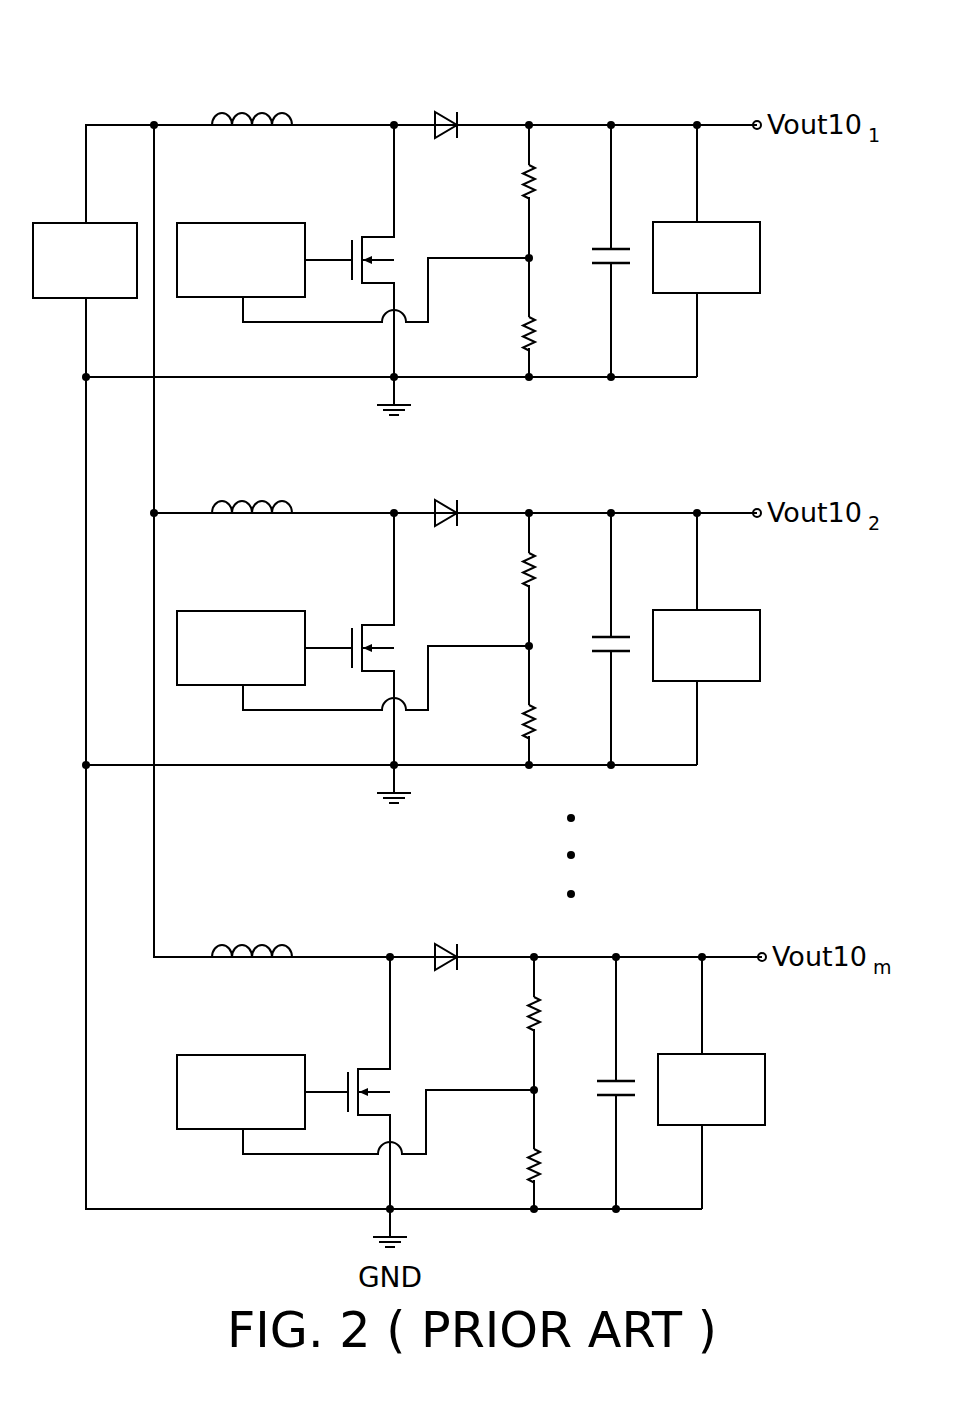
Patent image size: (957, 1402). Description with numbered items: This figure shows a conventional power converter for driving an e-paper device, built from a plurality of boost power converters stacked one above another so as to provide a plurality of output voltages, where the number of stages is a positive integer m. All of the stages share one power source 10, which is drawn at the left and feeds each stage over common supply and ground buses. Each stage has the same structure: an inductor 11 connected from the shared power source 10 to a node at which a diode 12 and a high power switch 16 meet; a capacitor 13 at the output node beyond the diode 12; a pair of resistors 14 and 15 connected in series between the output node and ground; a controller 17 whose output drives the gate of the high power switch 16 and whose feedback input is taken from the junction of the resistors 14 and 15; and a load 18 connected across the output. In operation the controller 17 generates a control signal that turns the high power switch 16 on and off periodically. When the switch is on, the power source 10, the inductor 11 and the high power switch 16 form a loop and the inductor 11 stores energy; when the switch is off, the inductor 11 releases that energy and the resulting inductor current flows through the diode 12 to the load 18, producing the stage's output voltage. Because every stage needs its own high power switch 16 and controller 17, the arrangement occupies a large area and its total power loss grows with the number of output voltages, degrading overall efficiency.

The power source 10 is at (117, 222).
The inductor 11 is at (252, 501).
The diode 12 is at (450, 507).
The capacitor 13 is at (595, 635).
The resistor 14 is at (490, 599).
The resistor 15 is at (490, 747).
The high power switch 16 is at (349, 667).
The controller 17 is at (241, 638).
The load 18 is at (716, 635).